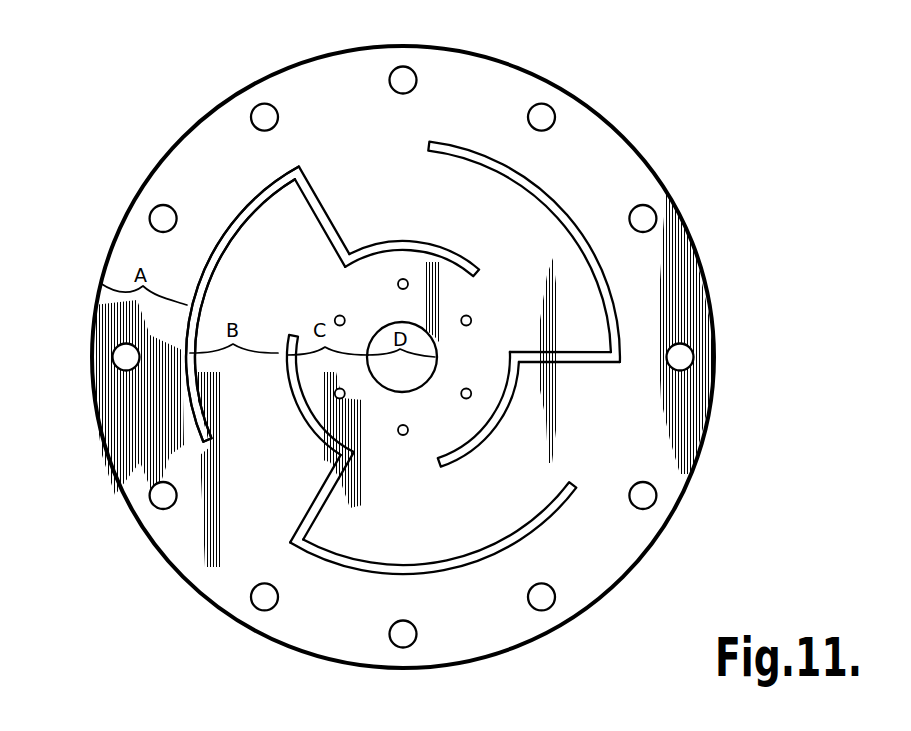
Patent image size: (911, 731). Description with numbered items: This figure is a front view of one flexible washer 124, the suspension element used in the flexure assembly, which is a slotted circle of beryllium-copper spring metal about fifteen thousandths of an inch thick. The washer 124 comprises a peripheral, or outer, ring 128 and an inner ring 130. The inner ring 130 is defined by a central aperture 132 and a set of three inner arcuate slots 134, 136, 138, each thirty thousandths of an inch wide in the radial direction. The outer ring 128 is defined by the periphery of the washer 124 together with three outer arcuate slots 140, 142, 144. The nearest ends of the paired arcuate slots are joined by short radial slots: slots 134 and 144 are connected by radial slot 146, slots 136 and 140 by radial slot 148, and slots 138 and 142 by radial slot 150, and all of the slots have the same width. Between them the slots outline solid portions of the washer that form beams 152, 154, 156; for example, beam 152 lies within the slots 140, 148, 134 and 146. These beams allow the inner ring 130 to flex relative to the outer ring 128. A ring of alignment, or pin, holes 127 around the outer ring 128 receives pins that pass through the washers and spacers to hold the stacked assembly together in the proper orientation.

The flexible washer 124 is at (162, 137).
The alignment holes 127 is at (412, 77).
The outer ring 128 is at (590, 142).
The inner ring 130 is at (440, 290).
The central aperture 132 is at (423, 387).
The inner arcuate slot 134 is at (397, 240).
The inner arcuate slot 136 is at (505, 413).
The inner arcuate slot 138 is at (310, 425).
The outer arcuate slot 140 is at (467, 145).
The outer arcuate slot 142 is at (348, 571).
The outer arcuate slot 144 is at (183, 383).
The radial slot 146 is at (313, 203).
The radial slot 148 is at (590, 363).
The radial slot 150 is at (320, 506).
The beam 152 is at (570, 273).
The beam 154 is at (493, 517).
The beam 156 is at (247, 413).